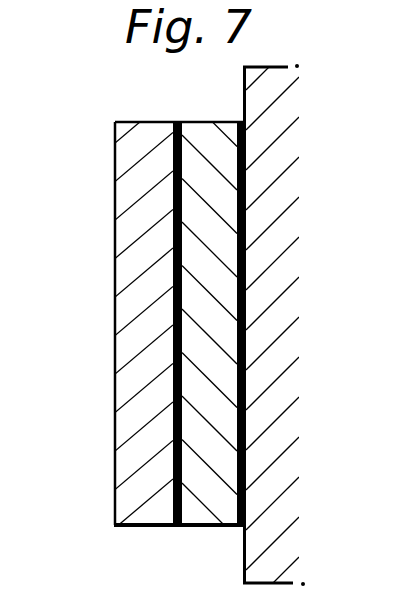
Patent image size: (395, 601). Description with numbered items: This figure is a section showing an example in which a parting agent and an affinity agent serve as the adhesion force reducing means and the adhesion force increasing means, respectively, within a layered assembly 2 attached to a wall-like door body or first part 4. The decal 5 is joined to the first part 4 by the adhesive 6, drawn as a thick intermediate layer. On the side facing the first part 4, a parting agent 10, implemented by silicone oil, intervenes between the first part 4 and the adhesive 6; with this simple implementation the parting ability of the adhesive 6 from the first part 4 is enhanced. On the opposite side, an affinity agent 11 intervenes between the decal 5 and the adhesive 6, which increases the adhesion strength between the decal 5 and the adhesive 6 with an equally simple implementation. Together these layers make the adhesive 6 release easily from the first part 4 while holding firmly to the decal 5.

The laminated panel 2 is at (95, 410).
The first part 4 is at (243, 555).
The decal 5 is at (115, 512).
The adhesive 6 is at (193, 530).
The parting agent 10 is at (245, 225).
The affinity agent 11 is at (182, 333).